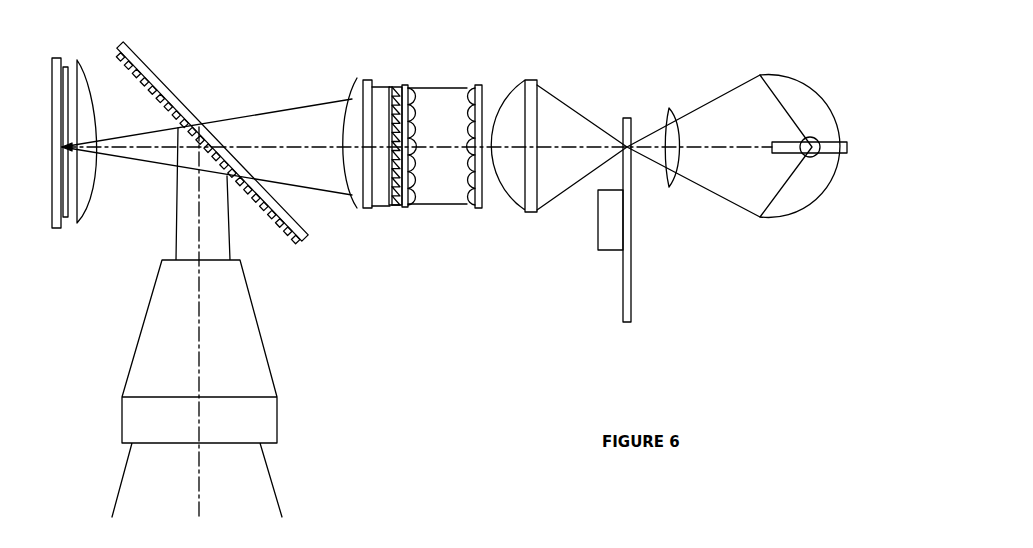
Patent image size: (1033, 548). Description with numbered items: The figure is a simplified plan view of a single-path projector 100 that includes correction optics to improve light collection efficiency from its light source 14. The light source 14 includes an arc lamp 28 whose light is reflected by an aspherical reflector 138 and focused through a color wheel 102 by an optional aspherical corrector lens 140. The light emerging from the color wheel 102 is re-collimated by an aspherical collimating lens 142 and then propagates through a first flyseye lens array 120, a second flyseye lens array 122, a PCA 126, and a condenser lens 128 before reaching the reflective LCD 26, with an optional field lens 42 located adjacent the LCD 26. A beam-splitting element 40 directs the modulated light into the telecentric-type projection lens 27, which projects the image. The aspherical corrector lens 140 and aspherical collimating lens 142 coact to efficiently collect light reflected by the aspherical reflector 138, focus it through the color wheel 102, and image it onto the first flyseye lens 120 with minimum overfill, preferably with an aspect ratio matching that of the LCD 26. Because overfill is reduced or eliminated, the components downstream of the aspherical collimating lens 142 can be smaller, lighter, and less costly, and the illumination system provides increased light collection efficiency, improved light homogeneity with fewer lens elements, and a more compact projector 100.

The light source 14 is at (787, 68).
The reflective liquid crystal display 26 is at (56, 229).
The telecentric-type projection lens 27 is at (278, 430).
The arc lamp 28 is at (816, 136).
The beam splitting mirror 40 is at (155, 78).
The field lens 42 is at (86, 206).
The single-path projector 100 is at (115, 330).
The color wheel 102 is at (632, 300).
The first flyseye lens array 120 is at (477, 84).
The second flyseye lens array 122 is at (404, 85).
The PCA 126 is at (395, 207).
The condenser lens 128 is at (353, 82).
The aspherical reflector 138 is at (806, 204).
The aspherical corrector lens 140 is at (670, 112).
The aspherical collimating lens 142 is at (522, 204).